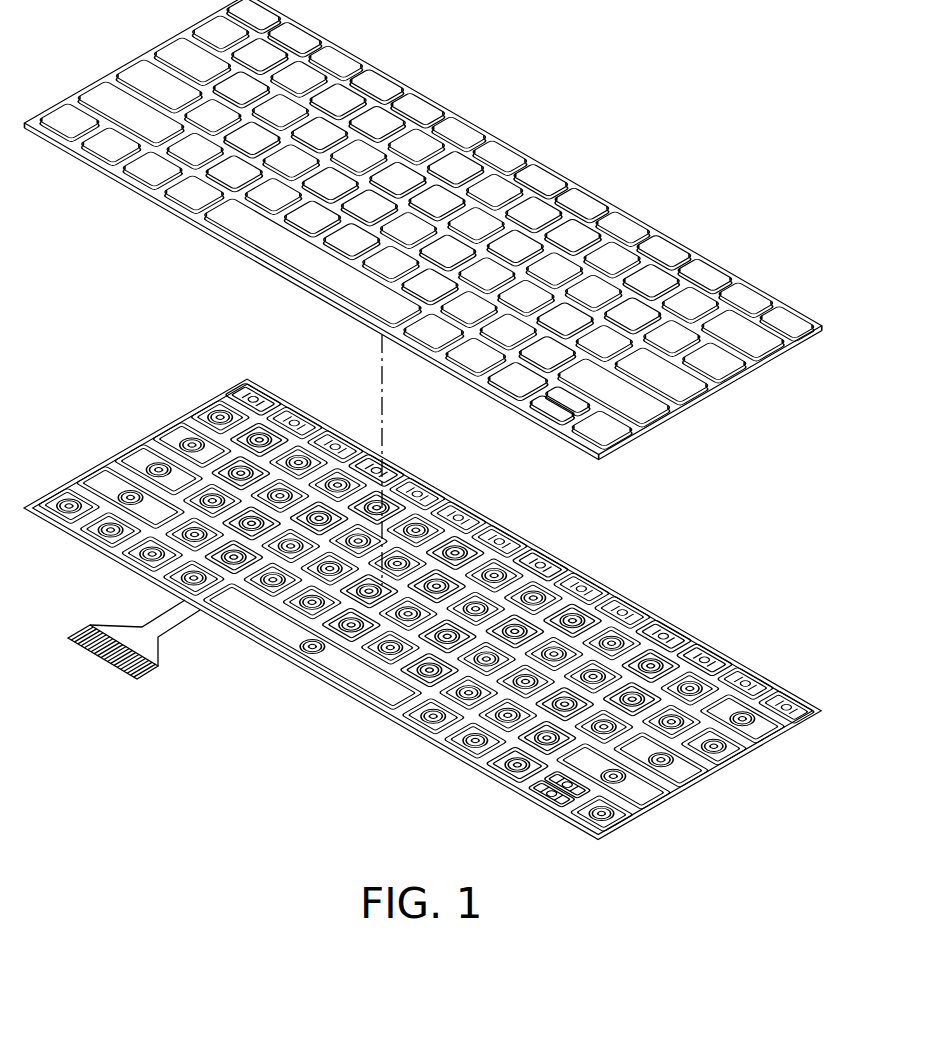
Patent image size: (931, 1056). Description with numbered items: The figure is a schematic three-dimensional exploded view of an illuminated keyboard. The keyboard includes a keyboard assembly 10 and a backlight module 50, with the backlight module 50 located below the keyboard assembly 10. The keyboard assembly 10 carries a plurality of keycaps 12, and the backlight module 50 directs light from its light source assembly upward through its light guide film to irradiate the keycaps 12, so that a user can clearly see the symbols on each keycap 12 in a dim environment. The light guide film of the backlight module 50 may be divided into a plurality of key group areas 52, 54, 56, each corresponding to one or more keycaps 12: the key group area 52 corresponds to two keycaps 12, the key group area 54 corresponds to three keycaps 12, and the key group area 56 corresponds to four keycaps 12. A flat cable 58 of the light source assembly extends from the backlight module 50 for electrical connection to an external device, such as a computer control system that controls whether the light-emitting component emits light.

The keyboard assembly 10 is at (434, 229).
The keycap 12 is at (746, 293).
The backlight module 50 is at (437, 588).
The key group area 52 is at (212, 464).
The key group area 54 is at (318, 633).
The key group area 56 is at (245, 424).
The flat cable 58 is at (140, 680).